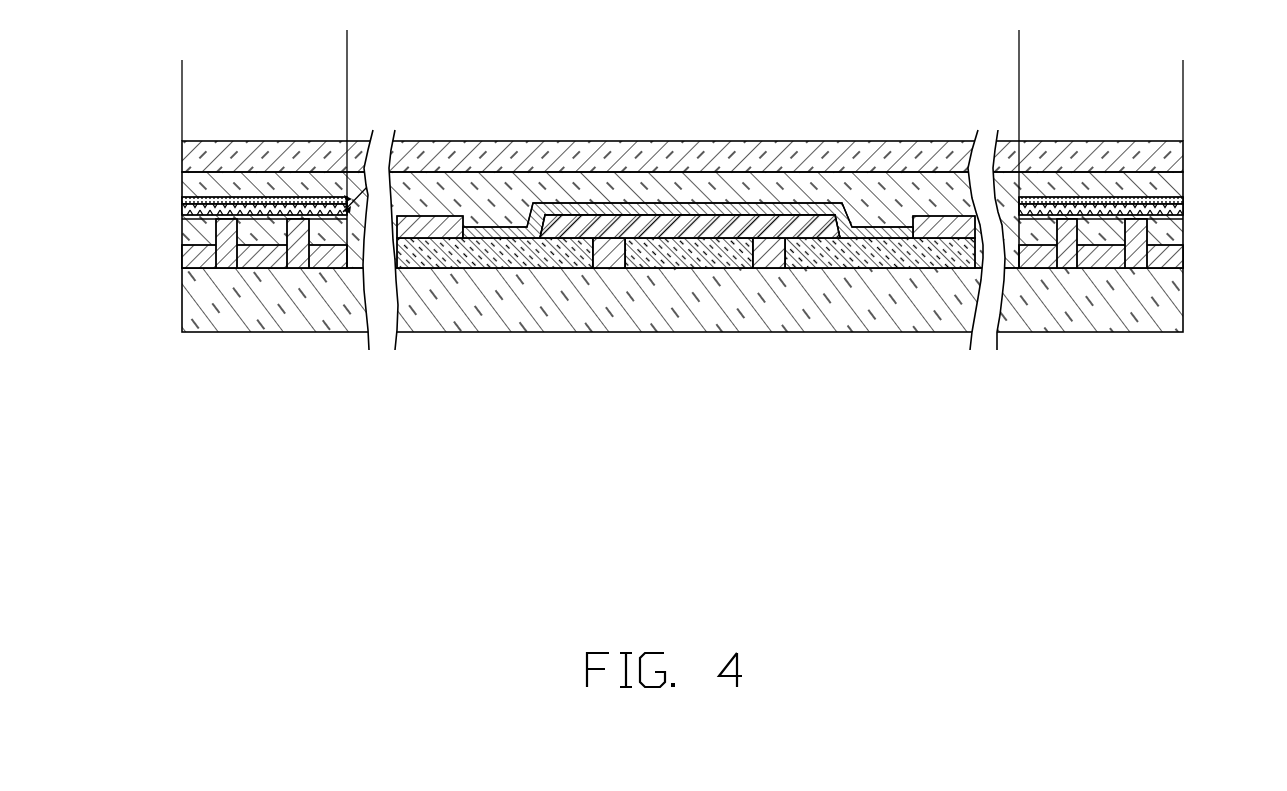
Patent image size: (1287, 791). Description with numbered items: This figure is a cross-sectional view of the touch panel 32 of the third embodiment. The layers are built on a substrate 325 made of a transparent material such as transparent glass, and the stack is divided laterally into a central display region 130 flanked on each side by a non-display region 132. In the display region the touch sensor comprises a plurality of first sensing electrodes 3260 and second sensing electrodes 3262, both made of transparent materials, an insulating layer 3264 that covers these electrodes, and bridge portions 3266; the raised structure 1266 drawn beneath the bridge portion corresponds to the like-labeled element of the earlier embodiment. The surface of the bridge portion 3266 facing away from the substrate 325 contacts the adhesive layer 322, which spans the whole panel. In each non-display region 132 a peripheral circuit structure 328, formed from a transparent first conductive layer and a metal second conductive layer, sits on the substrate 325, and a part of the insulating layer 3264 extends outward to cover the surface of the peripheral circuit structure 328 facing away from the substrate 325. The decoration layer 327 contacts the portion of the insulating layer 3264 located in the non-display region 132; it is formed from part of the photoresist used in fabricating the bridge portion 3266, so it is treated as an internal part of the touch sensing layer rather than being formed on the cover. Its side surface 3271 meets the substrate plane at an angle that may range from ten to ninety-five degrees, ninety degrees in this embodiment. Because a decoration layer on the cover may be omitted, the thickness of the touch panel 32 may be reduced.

The touch panel 32 is at (168, 83).
The display region 130 is at (1019, 38).
The non-display region 132 is at (347, 69).
The adhesive layer 322 is at (207, 187).
The substrate 325 is at (200, 298).
The decoration layer 327 is at (192, 200).
The peripheral circuit structure 328 is at (1172, 258).
The gate electrode 1266 is at (822, 222).
The first sensing electrodes 3260 is at (502, 253).
The second sensing electrodes 3262 is at (695, 250).
The insulating layer 3264 is at (298, 250).
The bridge portion 3266 is at (542, 228).
The inclined end portion of pixel electrode 3271 is at (356, 209).